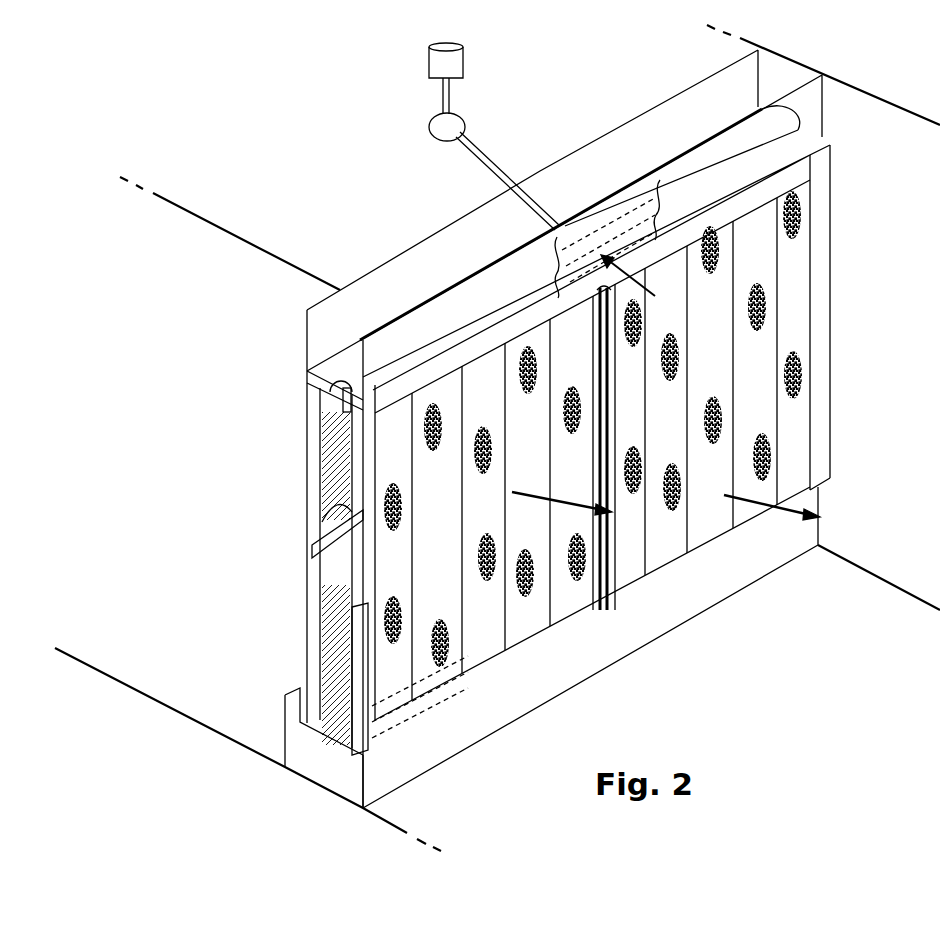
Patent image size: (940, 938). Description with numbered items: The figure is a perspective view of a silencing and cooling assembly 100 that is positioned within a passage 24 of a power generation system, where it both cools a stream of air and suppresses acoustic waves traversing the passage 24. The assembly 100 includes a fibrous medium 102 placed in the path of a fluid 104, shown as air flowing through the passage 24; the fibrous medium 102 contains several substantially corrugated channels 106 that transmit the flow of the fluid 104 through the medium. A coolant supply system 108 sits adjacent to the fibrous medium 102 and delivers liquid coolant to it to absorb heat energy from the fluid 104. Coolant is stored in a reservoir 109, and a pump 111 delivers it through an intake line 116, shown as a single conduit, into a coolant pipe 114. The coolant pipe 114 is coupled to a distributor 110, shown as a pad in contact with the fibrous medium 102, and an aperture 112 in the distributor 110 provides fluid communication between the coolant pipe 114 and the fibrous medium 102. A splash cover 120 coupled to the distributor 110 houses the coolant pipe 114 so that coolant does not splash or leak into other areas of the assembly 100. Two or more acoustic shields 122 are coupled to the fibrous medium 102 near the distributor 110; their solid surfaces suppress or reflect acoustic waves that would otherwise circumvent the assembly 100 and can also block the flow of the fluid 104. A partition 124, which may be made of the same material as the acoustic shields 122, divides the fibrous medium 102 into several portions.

The passage 24 is at (257, 471).
The assembly 100 is at (550, 106).
The fibrous medium 102 is at (802, 262).
The fluid 104 is at (612, 512).
The corrugated channels 106 is at (800, 205).
The coolant supply system 108 is at (643, 287).
The reservoir 109 is at (428, 62).
The distributor 110 is at (320, 372).
The pump 111 is at (430, 128).
The aperture 112 is at (320, 397).
The coolant pipe 114 is at (614, 226).
The intake line 116 is at (543, 205).
The splash cover 120 is at (482, 290).
The acoustic shields 122 is at (375, 270).
The partition 124 is at (387, 560).